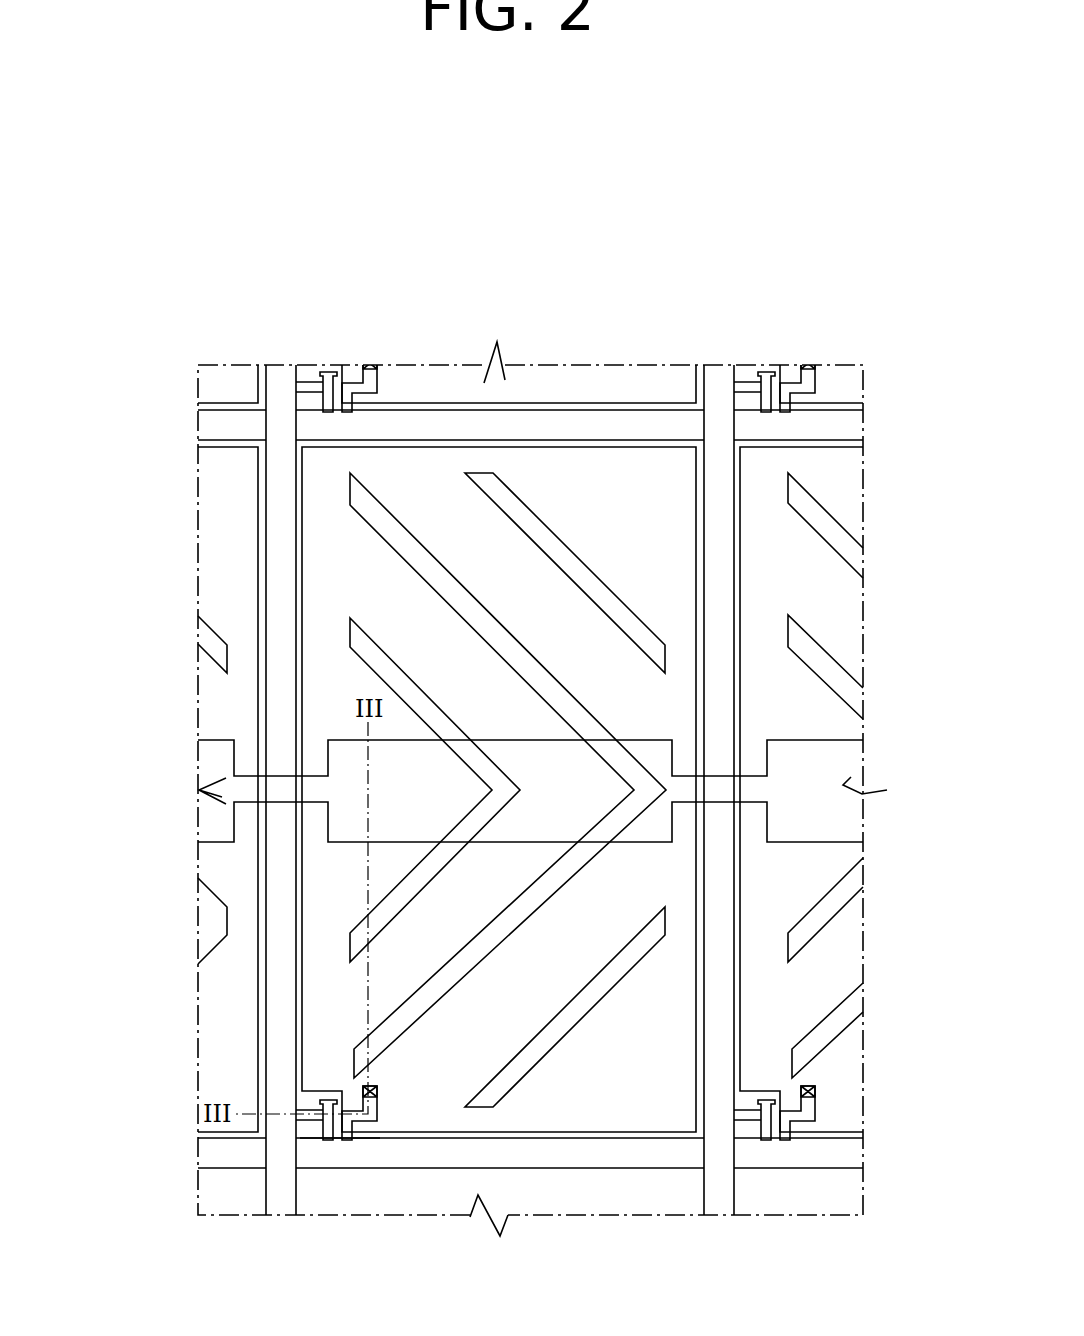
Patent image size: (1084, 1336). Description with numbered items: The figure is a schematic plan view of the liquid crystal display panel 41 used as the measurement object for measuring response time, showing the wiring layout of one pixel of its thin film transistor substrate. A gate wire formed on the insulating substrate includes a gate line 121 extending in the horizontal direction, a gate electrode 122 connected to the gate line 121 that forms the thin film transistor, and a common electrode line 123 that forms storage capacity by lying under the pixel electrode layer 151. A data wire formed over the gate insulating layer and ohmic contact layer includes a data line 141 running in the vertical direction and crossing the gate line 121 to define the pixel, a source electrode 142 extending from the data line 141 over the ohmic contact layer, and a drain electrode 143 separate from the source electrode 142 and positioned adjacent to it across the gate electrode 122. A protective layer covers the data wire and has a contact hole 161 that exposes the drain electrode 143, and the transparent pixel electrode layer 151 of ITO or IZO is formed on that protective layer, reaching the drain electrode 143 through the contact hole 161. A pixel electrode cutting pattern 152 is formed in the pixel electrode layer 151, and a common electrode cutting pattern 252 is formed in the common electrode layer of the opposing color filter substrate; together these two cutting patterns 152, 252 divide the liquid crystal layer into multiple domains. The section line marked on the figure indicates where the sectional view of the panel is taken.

The liquid crystal display panel 41 is at (672, 292).
The gate line 121 is at (481, 1155).
The gate electrode 122 is at (328, 1141).
The common electrode line 123 is at (848, 752).
The data line 141 is at (273, 918).
The source electrode 142 is at (304, 1109).
The drain electrode 143 is at (367, 1124).
The pixel electrode layer 151 is at (697, 588).
The pixel electrode cutting pattern 152 is at (355, 508).
The contact hole 161 is at (387, 1082).
The common electrode cutting pattern 252 is at (515, 497).